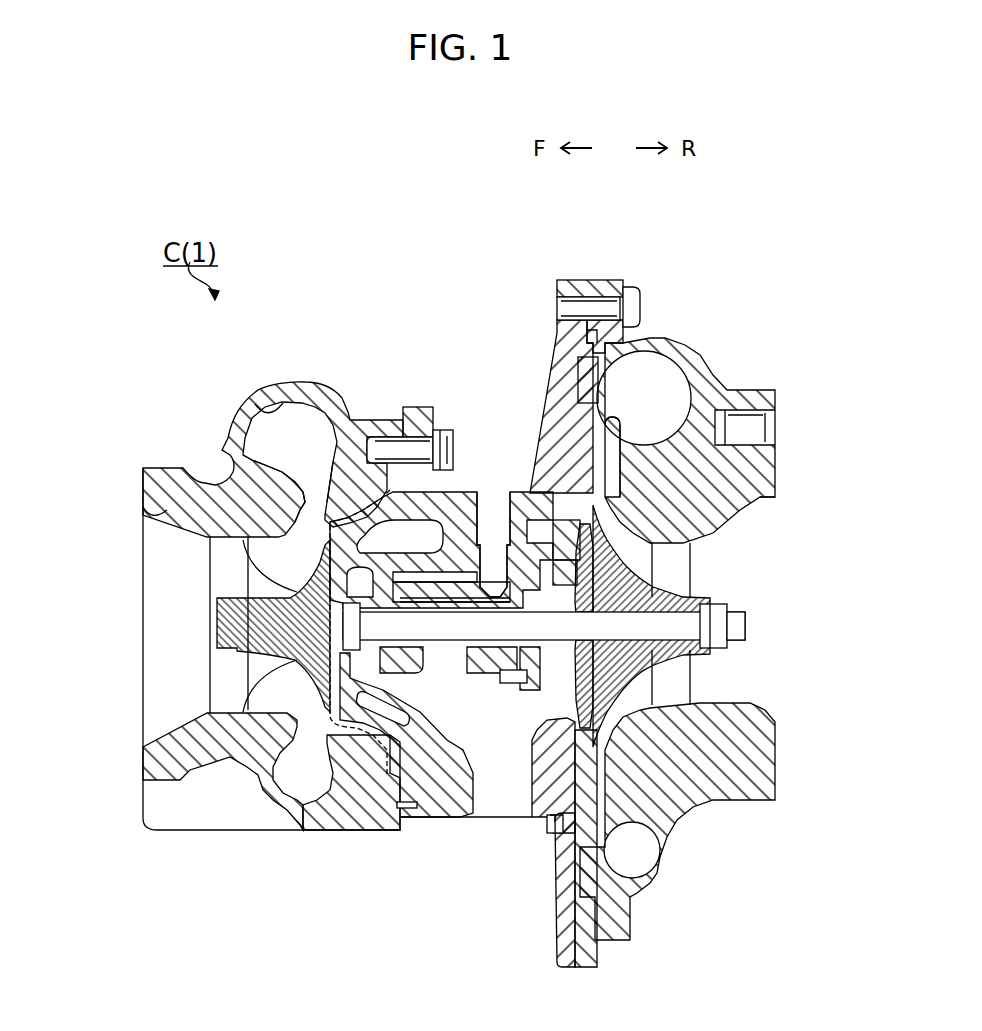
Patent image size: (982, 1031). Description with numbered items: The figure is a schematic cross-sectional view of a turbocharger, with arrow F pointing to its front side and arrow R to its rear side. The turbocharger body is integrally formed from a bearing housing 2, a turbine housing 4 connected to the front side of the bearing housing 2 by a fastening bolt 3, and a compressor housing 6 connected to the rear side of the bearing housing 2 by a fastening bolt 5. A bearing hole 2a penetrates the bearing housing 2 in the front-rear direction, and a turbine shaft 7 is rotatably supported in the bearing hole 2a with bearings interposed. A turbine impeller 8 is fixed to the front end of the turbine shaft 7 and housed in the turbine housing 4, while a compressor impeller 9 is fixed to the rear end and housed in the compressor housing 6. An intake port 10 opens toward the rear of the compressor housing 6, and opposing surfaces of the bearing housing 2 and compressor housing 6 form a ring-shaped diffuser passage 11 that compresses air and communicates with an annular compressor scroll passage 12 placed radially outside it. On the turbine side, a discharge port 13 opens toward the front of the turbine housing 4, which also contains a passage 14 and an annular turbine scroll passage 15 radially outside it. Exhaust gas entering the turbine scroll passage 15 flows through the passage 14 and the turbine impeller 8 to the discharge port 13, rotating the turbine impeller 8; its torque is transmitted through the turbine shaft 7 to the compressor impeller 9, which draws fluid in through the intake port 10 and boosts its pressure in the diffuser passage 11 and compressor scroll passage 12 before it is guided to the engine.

The bearing housing 2 is at (441, 648).
The bearing hole 2a is at (433, 635).
The fastening bolt 3 is at (443, 405).
The turbine housing 4 is at (273, 425).
The fastening bolt 5 is at (625, 288).
The compressor housing 6 is at (692, 584).
The turbine shaft 7 is at (467, 673).
The turbine impeller 8 is at (240, 697).
The compressor impeller 9 is at (678, 585).
The intake port 10 is at (745, 503).
The diffuser passage 11 is at (628, 437).
The compressor scroll passage 12 is at (660, 366).
The discharge port 13 is at (150, 517).
The passage 14 is at (250, 458).
The turbine scroll passage 15 is at (280, 408).